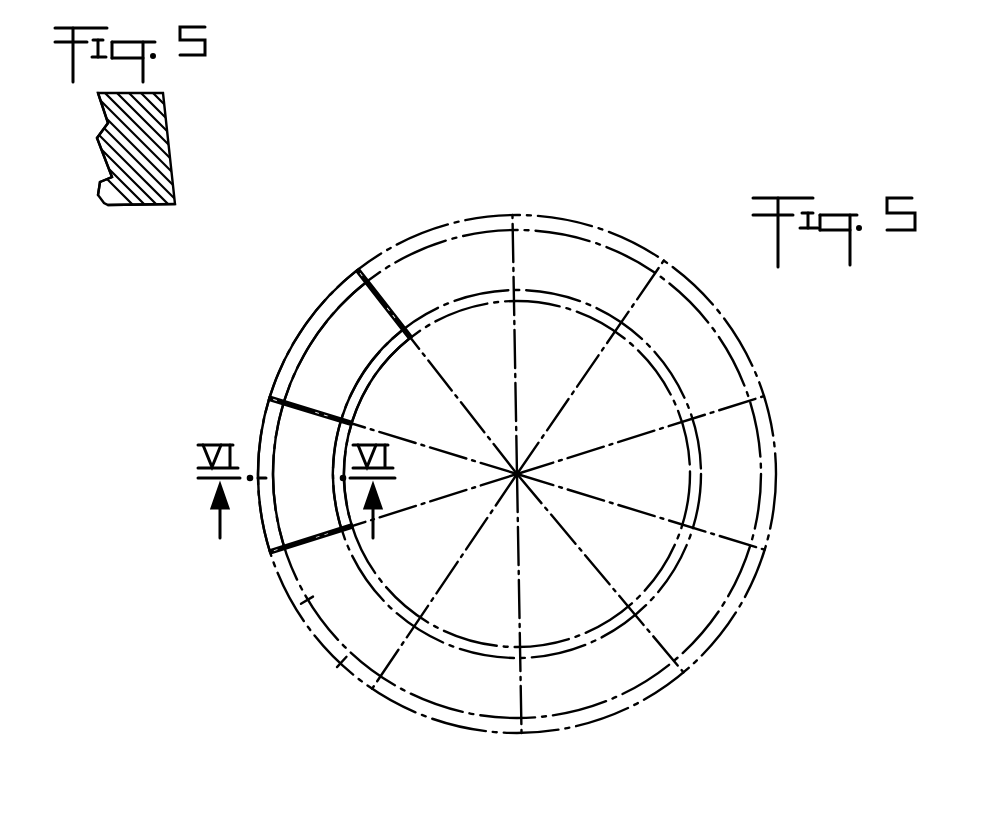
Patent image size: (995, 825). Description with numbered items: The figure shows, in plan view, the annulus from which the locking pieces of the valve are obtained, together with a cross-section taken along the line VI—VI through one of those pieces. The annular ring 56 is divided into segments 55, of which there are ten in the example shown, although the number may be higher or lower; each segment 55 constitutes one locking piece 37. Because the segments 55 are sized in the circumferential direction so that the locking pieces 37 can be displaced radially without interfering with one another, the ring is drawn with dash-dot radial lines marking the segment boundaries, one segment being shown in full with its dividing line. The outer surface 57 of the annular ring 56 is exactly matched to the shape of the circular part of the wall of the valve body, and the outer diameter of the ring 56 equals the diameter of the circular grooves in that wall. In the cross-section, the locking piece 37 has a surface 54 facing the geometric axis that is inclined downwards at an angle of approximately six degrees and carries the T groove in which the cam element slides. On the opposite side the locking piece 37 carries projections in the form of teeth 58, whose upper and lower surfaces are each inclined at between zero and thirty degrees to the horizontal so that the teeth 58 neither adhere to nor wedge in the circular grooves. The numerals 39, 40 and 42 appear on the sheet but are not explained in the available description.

In FIG. 6, the surface 54 is at (171, 143).
In FIG. 6, the teeth 58 is at (104, 103).
In FIG. 6, the outer surface 57 is at (94, 144).
In FIG. 5, the outer surface 57 is at (290, 614).
In FIG. 6, the lower lip 39 is at (100, 200).
In FIG. 6, the locking piece 37 is at (147, 207).
In FIG. 5, the segments 55 is at (266, 538).
In FIG. 5, the annular ring 56 is at (340, 660).
In FIG. 5, the element 40 is at (363, 14).
In FIG. 5, the element 42 is at (415, 6).